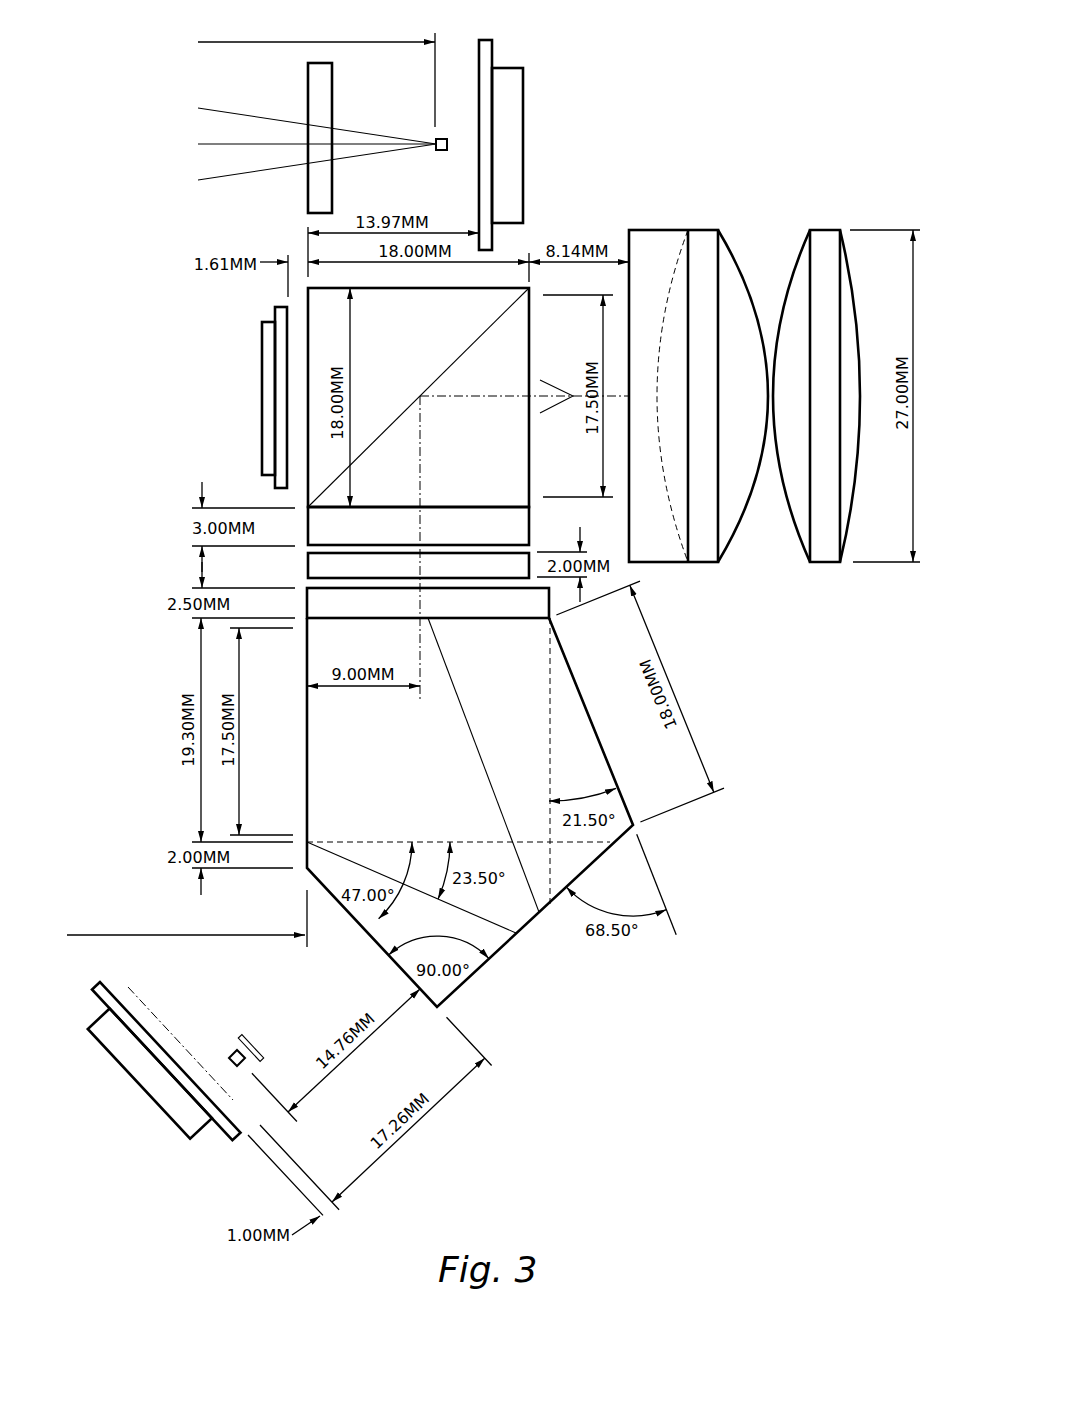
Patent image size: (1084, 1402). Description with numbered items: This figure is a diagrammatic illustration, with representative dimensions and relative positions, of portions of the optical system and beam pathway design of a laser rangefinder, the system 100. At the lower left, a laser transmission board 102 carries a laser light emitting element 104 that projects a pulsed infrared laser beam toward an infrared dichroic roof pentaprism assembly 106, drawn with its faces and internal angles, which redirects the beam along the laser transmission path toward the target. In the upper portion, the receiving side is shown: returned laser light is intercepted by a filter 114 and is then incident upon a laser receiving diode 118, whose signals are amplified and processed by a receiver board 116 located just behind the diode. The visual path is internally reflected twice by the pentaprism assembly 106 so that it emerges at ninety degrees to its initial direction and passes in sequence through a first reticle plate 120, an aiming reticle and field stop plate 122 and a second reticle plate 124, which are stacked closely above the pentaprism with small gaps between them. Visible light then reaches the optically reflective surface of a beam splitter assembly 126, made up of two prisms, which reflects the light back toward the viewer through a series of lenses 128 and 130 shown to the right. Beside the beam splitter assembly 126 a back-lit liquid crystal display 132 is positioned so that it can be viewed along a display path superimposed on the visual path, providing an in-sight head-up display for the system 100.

The system 100 is at (834, 976).
The laser transmission board 102 is at (227, 1133).
The laser light emitting element 104 is at (230, 1057).
The infrared dichroic roof pentaprism assembly 106 is at (626, 807).
The filter 114 is at (332, 183).
The receiver board 116 is at (513, 67).
The laser receiving diode 118 is at (445, 150).
The first reticle plate 120 is at (549, 603).
The aiming reticle and field stop plate 122 is at (308, 570).
The second reticle plate 124 is at (529, 527).
The beam splitter assembly 126 is at (529, 330).
The lens 128 is at (703, 230).
The lens 130 is at (827, 230).
The back-lit liquid crystal display 132 is at (275, 312).